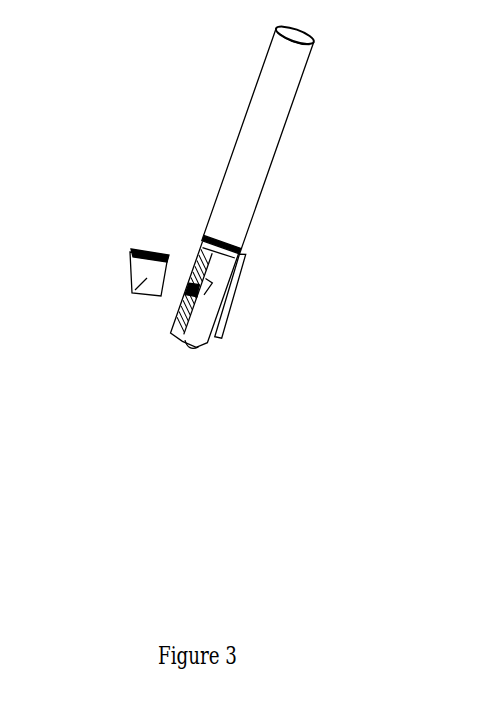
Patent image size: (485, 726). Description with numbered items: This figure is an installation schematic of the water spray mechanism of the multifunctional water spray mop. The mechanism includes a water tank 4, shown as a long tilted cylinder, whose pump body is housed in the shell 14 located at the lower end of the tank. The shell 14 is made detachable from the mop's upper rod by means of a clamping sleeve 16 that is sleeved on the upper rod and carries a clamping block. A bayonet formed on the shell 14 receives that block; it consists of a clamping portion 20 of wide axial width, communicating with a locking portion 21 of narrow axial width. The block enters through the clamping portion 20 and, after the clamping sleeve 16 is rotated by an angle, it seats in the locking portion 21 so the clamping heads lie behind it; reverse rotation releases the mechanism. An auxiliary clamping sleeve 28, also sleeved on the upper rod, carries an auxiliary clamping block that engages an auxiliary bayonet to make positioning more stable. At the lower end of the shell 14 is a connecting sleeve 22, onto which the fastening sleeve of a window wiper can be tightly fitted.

The water tank 4 is at (253, 153).
The shell 14 is at (213, 308).
The clamping sleeve 16 is at (133, 279).
The clamping portion 20 is at (182, 297).
The locking portion 21 is at (230, 297).
The connecting sleeve 22 is at (193, 352).
The auxiliary clamping sleeve 28 is at (137, 252).